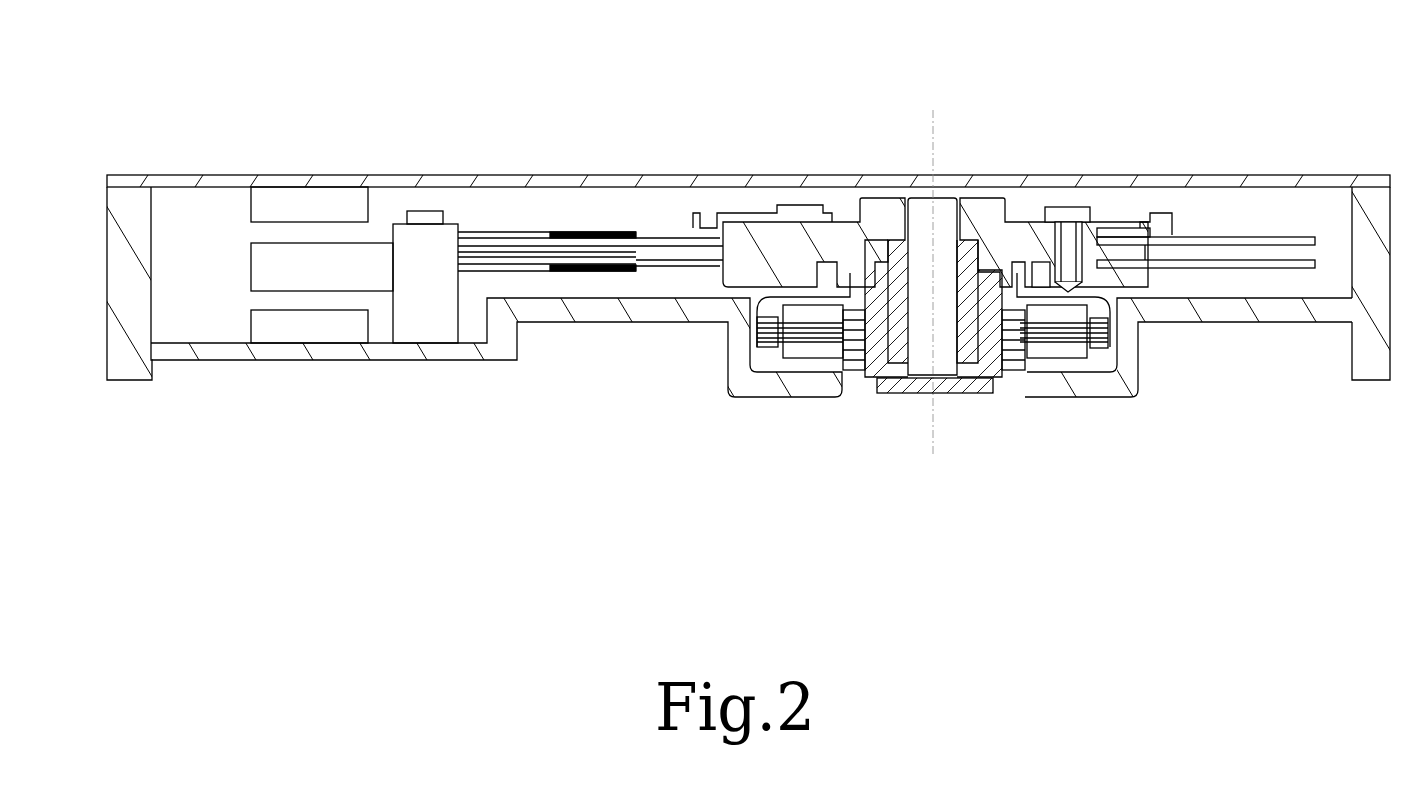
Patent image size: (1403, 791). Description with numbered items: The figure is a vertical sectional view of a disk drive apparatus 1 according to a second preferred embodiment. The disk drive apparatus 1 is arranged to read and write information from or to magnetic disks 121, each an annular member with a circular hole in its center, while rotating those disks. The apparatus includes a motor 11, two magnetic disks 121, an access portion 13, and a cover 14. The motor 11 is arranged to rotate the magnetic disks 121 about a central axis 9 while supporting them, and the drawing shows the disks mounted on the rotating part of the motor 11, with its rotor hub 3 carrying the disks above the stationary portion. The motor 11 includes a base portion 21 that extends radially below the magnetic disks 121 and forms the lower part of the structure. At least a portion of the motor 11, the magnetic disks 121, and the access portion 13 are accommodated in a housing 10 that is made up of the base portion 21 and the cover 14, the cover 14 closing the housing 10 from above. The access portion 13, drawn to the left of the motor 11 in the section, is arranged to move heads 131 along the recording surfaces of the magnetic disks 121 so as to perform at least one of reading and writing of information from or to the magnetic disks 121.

The disk drive apparatus 1 is at (618, 140).
The rotor hub 3 is at (1103, 205).
The central axis 9 is at (933, 125).
The housing 10 is at (223, 150).
The motor 11 is at (842, 208).
The access portion 13 is at (498, 230).
The cover 14 is at (397, 182).
The base portion 21 is at (1250, 313).
The magnetic disk 121 is at (1257, 240).
The head 131 is at (608, 262).